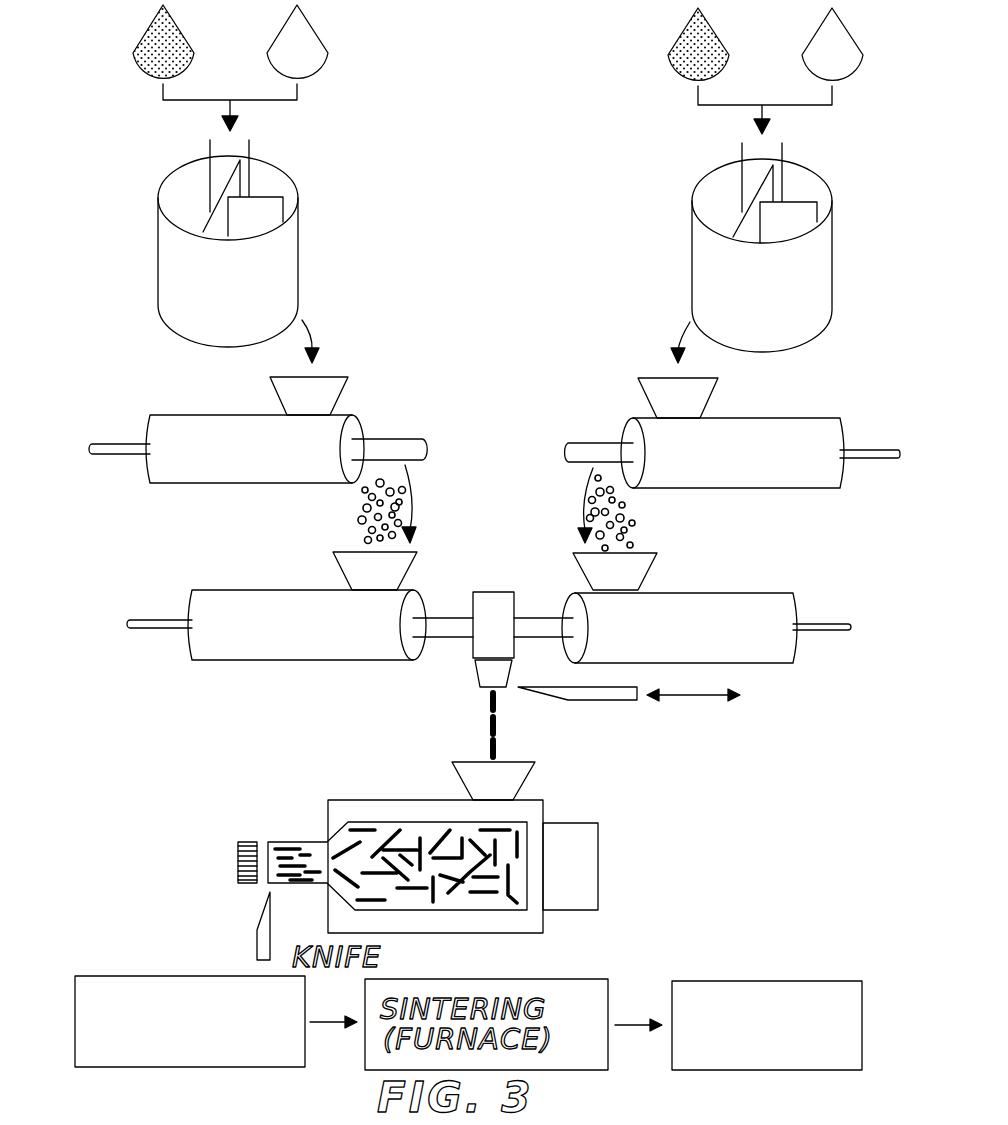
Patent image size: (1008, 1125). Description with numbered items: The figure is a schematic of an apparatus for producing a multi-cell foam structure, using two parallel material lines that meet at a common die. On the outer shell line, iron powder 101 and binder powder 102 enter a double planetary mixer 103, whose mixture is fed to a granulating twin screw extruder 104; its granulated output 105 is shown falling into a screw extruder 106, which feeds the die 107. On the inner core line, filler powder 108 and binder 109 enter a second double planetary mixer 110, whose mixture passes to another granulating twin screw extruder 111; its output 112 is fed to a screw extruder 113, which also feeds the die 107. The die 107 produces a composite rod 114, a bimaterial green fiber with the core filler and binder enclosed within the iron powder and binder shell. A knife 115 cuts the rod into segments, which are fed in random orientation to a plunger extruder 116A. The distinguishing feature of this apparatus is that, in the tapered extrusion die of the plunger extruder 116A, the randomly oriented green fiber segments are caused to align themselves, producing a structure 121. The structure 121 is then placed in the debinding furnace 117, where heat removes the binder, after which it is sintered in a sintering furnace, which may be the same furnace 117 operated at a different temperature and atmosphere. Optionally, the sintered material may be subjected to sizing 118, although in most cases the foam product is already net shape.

The iron powder 101 is at (165, 48).
The binder powder 102 is at (295, 48).
The double planetary mixer 103 is at (277, 247).
The granulating twin screw extruder 104 is at (228, 430).
The output of the granulating twin screw extruder 105 is at (367, 509).
The screw extruder 106 is at (275, 612).
The die 107 is at (490, 610).
The filler powder 108 is at (688, 35).
The binder 109 is at (828, 40).
The double planetary mixer 110 is at (705, 245).
The granulating twin screw extruder 111 is at (717, 440).
The output of the granulating twin screw extruder 112 is at (630, 505).
The screw extruder 113 is at (677, 612).
The composite rod 114 is at (487, 720).
The knife 115 is at (585, 693).
The plunger extruder 116A is at (583, 882).
The debinding furnace 117 is at (203, 976).
The sizing 118 is at (730, 981).
The structure 121 is at (237, 865).